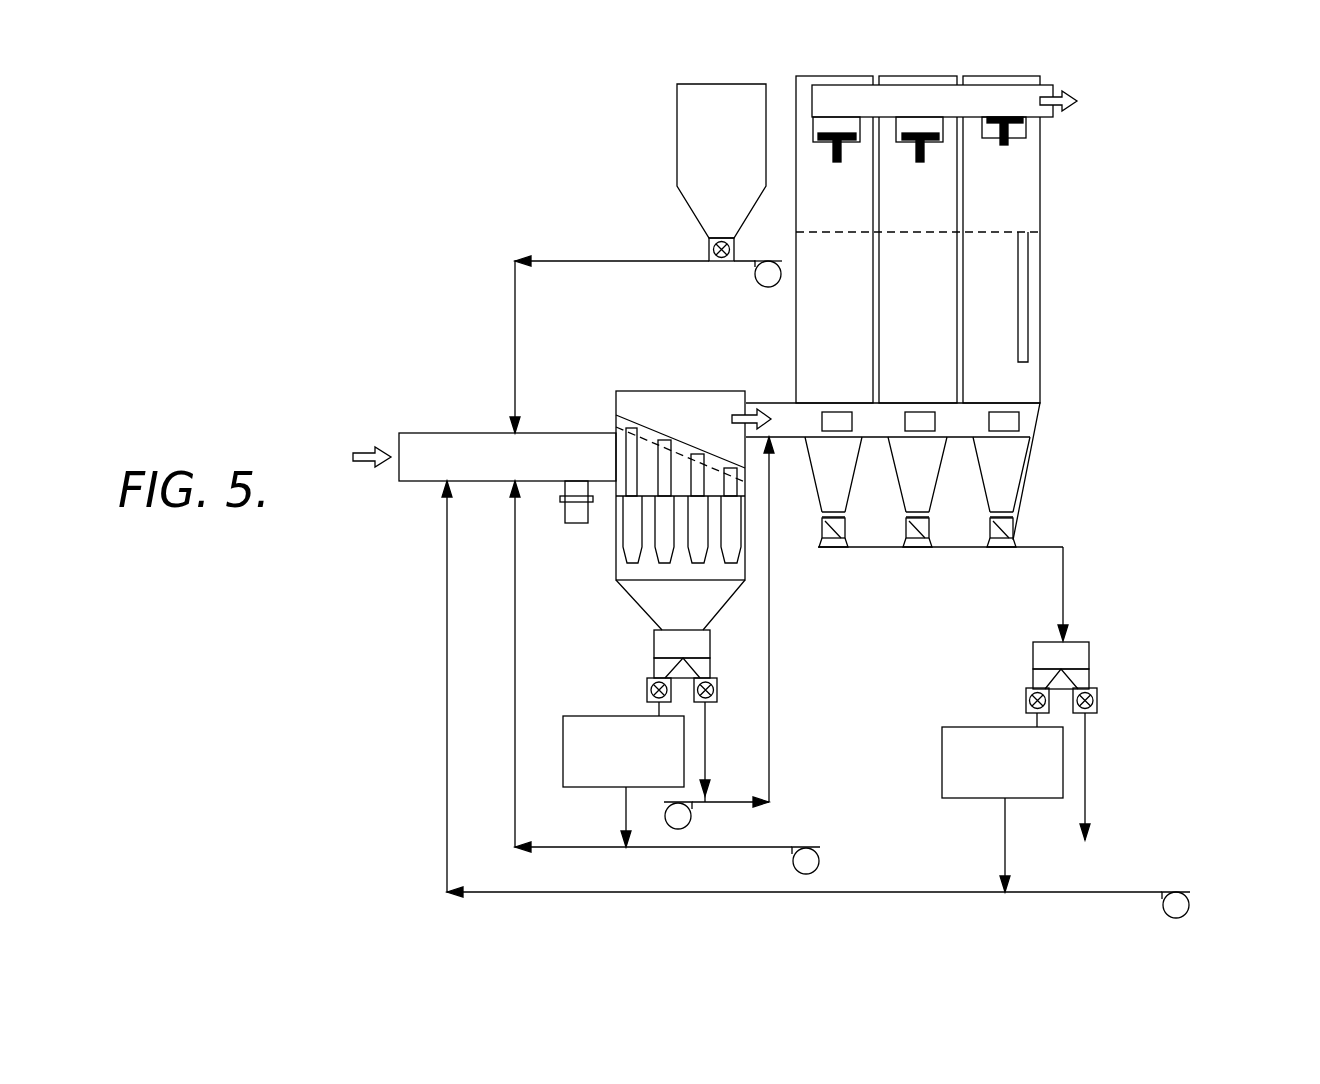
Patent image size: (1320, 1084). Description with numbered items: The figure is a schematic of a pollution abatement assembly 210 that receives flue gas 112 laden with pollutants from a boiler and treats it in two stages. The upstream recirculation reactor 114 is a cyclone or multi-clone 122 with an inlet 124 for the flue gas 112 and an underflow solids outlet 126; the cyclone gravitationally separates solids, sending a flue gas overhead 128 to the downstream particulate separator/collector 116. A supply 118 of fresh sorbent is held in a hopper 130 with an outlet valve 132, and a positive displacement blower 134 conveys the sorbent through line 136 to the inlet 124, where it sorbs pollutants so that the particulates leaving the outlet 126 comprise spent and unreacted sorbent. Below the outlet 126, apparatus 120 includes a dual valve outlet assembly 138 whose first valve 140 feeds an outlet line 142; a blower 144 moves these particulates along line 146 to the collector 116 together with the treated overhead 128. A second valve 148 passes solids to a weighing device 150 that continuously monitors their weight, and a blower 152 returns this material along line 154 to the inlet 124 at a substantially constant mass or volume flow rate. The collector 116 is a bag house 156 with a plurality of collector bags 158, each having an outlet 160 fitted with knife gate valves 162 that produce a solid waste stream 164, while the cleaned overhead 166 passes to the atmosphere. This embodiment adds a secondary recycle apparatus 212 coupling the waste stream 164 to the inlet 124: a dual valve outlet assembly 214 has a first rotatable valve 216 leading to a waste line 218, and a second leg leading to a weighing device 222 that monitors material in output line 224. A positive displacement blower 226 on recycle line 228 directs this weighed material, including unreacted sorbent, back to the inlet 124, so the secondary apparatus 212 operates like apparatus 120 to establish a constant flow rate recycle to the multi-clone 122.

The flue gas 112 is at (365, 463).
The recirculation reactor 114 is at (672, 380).
The particulate separator/collector 116 is at (1078, 302).
The supply of fresh sorbent 118 is at (678, 176).
The apparatus 120 is at (673, 729).
The multi-clone 122 is at (622, 405).
The inlet 124 is at (413, 438).
The underflow solids outlet 126 is at (700, 625).
The flue gas overhead 128 is at (750, 417).
The hopper 130 is at (735, 98).
The outlet valve 132 is at (708, 250).
The positive displacement blower 134 is at (768, 280).
The line 136 is at (612, 264).
The dual valve outlet assembly 138 is at (705, 668).
The first valve 140 is at (718, 696).
The outlet line 142 is at (708, 745).
The positive displacement blower 144 is at (692, 820).
The line 146 is at (770, 567).
The second valve 148 is at (646, 698).
The weighing device 150 is at (575, 790).
The positive displacement blower 152 is at (822, 857).
The line 154 is at (652, 848).
The bag house 156 is at (1036, 173).
The collector bags 158 is at (1025, 392).
The outlet 160 is at (1012, 542).
The knife gate valves 162 is at (1012, 523).
The solid waste stream 164 is at (1065, 572).
The overhead 166 is at (1072, 96).
The pollution abatement assembly 210 is at (1150, 210).
The secondary recycle apparatus 212 is at (852, 703).
The dual valve outlet assembly 214 is at (1088, 656).
The first rotatable valve 216 is at (1099, 701).
The waste line 218 is at (1087, 773).
The weighing device 222 is at (944, 770).
The output line 224 is at (1003, 843).
The positive displacement blower 226 is at (1190, 893).
The recycle line 228 is at (1028, 700).